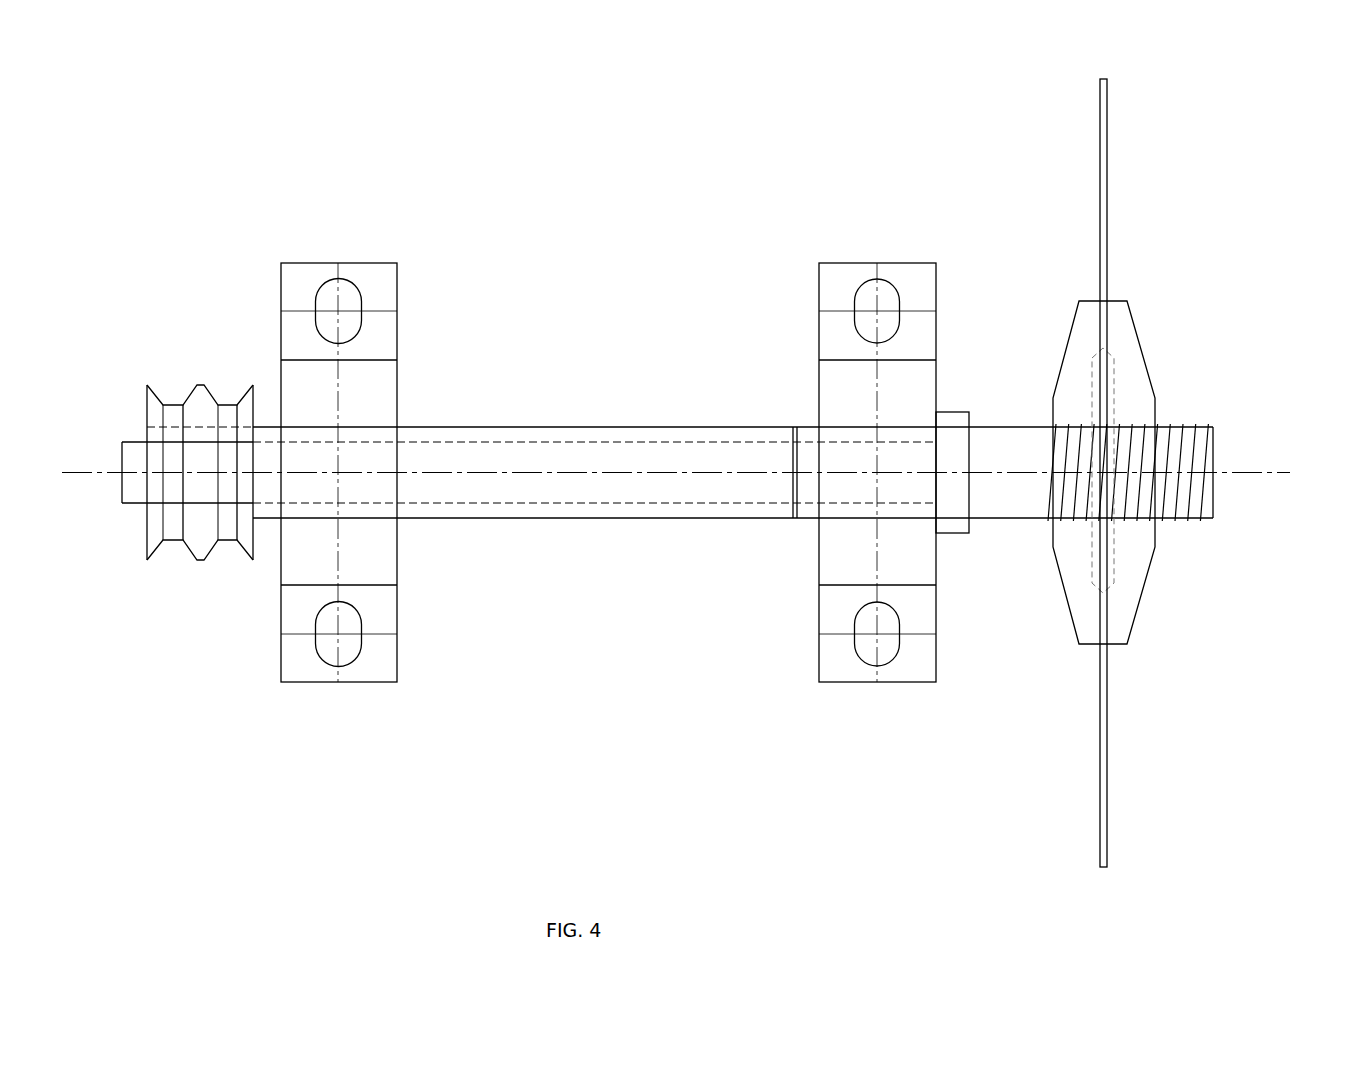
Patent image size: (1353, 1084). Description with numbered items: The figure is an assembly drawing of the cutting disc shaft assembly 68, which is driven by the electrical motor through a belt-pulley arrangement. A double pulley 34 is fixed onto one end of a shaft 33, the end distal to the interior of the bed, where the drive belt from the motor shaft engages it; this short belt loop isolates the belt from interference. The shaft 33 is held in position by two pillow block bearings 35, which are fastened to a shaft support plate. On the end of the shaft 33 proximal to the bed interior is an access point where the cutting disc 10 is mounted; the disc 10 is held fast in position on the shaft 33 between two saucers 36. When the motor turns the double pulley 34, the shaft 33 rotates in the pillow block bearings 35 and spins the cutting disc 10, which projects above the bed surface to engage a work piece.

The cutting disc shaft assembly 68 is at (476, 108).
The shaft 33 is at (592, 496).
The double pulley 34 is at (208, 412).
The pillow block bearings 35 is at (373, 276).
The saucers 36 is at (1075, 379).
The cutting disc 10 is at (1105, 188).